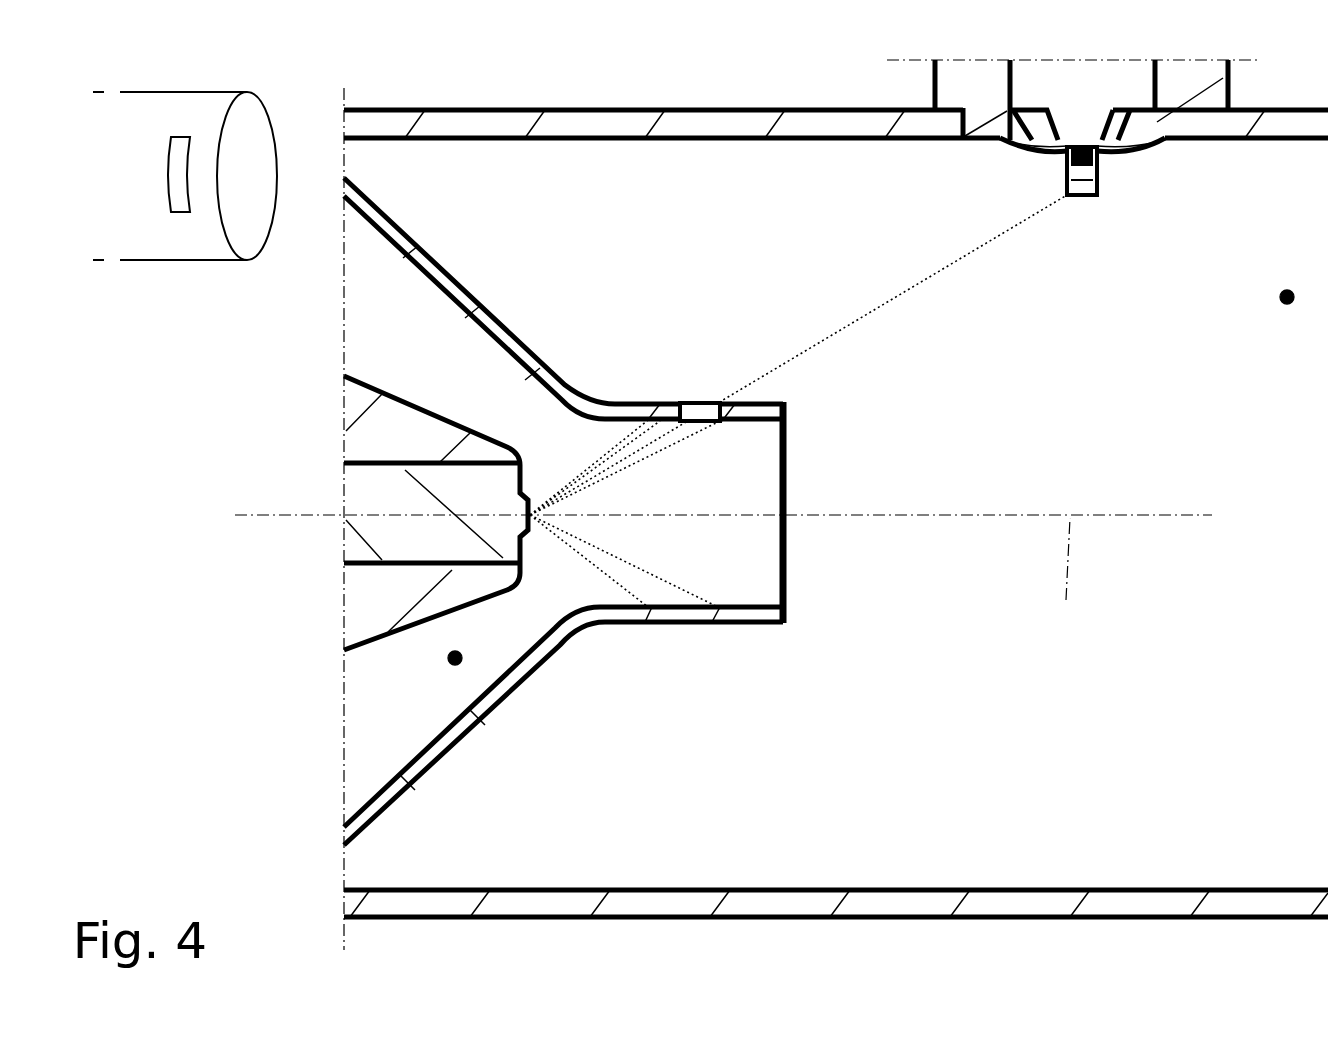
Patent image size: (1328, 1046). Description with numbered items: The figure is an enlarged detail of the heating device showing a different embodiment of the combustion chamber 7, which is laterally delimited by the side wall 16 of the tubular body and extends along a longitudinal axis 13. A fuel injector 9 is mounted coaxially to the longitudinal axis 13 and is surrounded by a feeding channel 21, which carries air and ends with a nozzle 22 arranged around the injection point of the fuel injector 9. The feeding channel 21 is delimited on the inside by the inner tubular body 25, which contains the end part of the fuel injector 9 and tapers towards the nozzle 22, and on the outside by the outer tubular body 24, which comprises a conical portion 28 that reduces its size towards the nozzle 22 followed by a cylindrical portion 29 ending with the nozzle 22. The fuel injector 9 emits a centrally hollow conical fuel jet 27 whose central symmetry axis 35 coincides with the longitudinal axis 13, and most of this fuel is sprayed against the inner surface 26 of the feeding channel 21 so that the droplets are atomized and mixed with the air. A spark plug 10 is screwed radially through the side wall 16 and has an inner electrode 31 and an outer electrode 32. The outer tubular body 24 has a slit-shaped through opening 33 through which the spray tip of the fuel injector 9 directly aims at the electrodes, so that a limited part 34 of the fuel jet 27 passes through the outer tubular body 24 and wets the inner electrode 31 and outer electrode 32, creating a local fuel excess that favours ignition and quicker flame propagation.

The combustion chamber 7 is at (1287, 290).
The fuel injector 9 is at (372, 503).
The spark plug 10 is at (1118, 85).
The longitudinal axis 13 is at (253, 520).
The side wall 16 is at (1140, 906).
The feeding channel 21 is at (455, 665).
The nozzle 22 is at (260, 179).
The outer tubular body 24 is at (160, 238).
The inner tubular body 25 is at (420, 440).
The inner surface 26 is at (579, 599).
The fuel jet 27 is at (716, 457).
The conical portion 28 is at (562, 736).
The cylindrical portion 29 is at (758, 643).
The inner electrode 31 is at (1068, 163).
The outer electrode 32 is at (1087, 198).
The through opening 33 is at (185, 177).
The limited part of the fuel jet 34 is at (898, 310).
The central symmetry axis 35 is at (1067, 572).